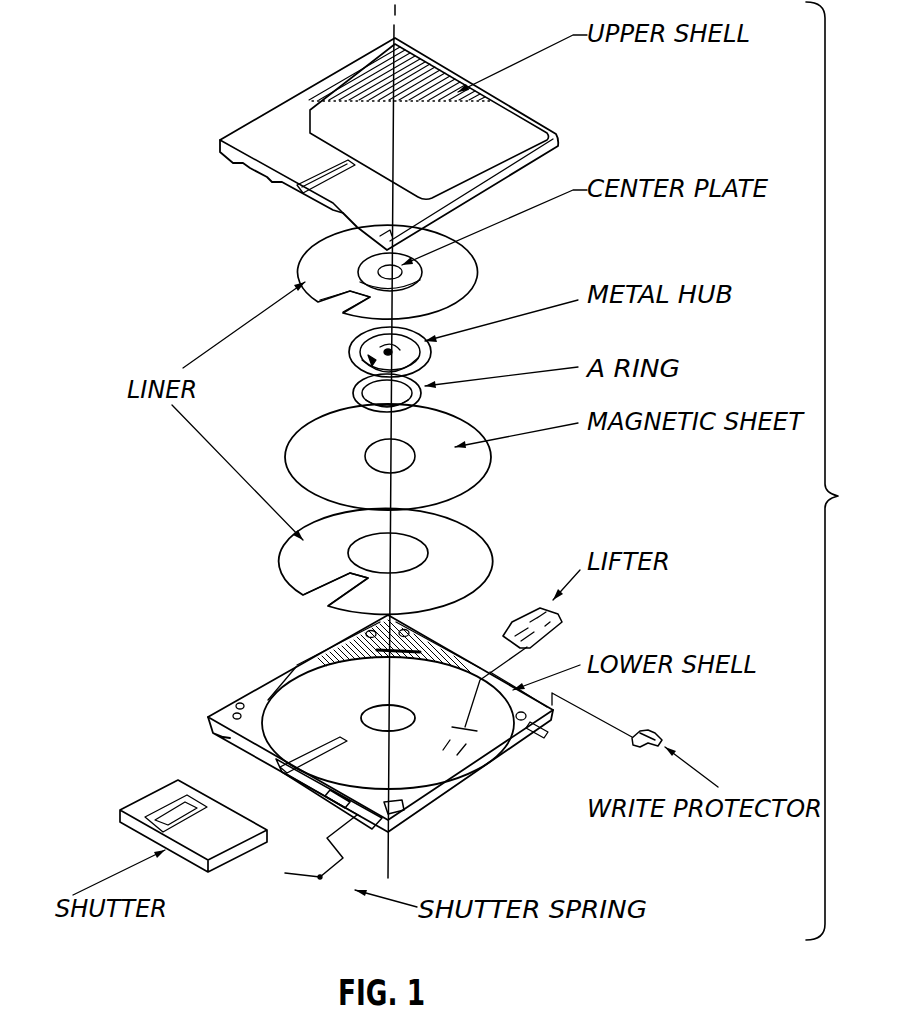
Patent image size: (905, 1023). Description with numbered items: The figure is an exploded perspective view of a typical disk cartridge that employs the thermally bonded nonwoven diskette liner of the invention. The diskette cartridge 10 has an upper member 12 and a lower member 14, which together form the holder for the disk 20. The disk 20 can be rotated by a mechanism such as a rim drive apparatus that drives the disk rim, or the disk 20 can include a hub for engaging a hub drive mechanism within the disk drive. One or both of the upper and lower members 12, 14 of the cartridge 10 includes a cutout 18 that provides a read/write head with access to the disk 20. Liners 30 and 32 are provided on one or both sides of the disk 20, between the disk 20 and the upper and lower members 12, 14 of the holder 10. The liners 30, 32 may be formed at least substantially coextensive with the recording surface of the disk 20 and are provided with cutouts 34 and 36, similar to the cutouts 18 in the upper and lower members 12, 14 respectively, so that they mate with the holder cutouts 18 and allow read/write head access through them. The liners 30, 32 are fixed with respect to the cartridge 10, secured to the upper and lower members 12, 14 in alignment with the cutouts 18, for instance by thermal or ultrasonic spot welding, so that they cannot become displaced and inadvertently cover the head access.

The diskette cartridge 10 is at (836, 471).
The upper member 12 is at (250, 118).
The lower member 14 is at (220, 735).
The cutout 18 is at (300, 188).
The disk 20 is at (298, 428).
The liner 30 is at (300, 265).
The liner 32 is at (278, 556).
The cutout 34 is at (333, 305).
The cutout 36 is at (318, 600).